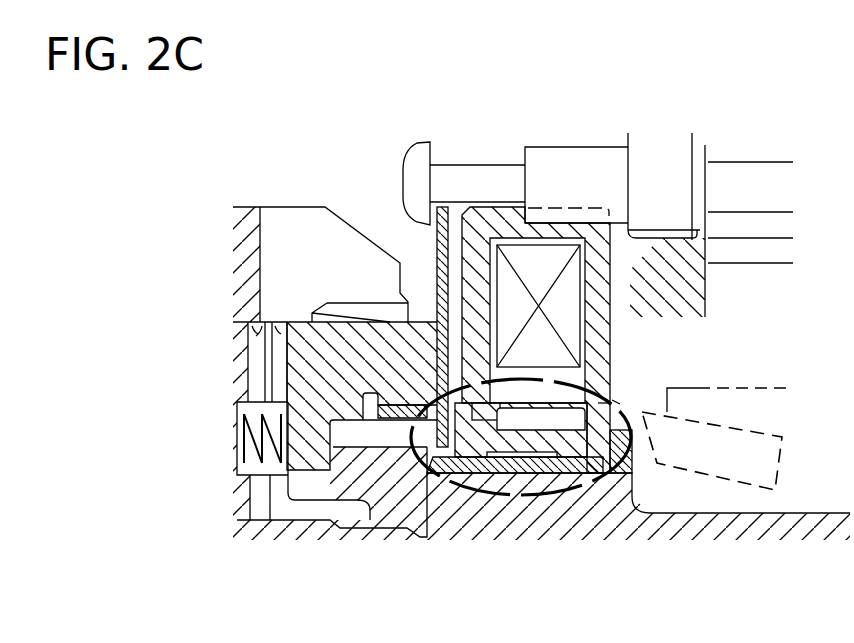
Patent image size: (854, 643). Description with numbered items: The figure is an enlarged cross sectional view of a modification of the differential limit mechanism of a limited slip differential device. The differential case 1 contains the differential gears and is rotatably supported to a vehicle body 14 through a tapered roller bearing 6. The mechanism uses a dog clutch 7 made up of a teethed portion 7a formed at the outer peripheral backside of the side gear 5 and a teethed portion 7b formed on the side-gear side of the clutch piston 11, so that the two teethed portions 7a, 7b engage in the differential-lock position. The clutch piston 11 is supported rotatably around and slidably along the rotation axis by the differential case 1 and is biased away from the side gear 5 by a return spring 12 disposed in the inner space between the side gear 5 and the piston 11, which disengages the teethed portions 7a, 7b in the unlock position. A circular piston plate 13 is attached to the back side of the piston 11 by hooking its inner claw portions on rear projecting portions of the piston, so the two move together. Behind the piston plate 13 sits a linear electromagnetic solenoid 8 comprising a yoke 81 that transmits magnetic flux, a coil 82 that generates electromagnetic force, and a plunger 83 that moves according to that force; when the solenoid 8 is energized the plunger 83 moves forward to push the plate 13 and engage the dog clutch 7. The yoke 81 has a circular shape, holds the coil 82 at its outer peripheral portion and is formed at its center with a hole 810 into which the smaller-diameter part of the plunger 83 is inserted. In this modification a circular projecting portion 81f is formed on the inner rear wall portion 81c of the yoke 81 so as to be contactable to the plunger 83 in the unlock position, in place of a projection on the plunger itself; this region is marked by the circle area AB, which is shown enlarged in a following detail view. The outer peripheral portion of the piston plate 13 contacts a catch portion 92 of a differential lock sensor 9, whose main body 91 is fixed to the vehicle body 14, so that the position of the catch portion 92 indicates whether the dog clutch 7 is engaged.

The differential case 1 is at (572, 533).
The side gear 5 is at (277, 528).
The tapered roller bearing 6 is at (703, 432).
The dog clutch 7 is at (345, 258).
The teethed portion 7a is at (258, 322).
The teethed portion 7b is at (283, 322).
The linear electromagnetic solenoid 8 is at (494, 488).
The differential lock sensor 9 is at (583, 140).
The clutch piston 11 is at (373, 363).
The return spring 12 is at (242, 445).
The piston plate 13 is at (437, 262).
The vehicle body 14 is at (705, 287).
The yoke 81 is at (608, 342).
The inner rear wall portion 81c is at (632, 452).
The circular projecting portion 81f is at (606, 398).
The coil 82 is at (552, 299).
The plunger 83 is at (585, 475).
The main body 91 is at (657, 150).
The catch portion 92 is at (412, 170).
The hole 810 is at (470, 478).
The circle area AB is at (614, 402).